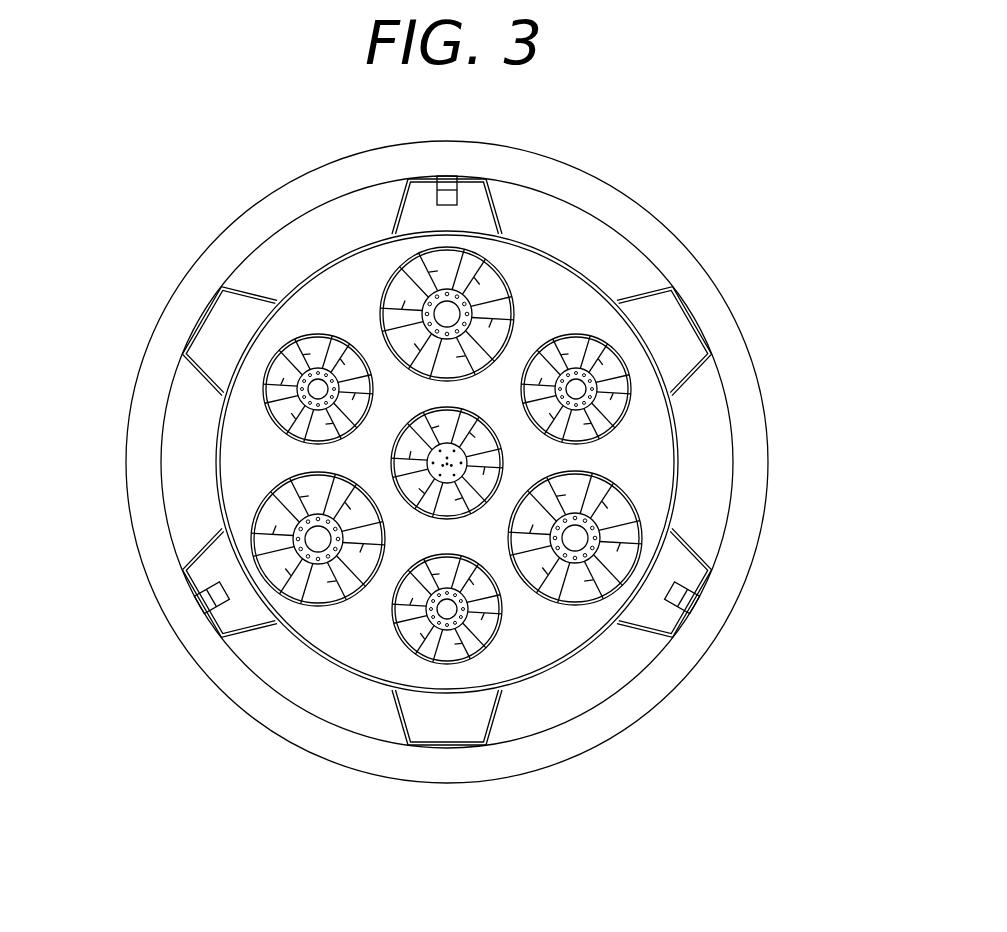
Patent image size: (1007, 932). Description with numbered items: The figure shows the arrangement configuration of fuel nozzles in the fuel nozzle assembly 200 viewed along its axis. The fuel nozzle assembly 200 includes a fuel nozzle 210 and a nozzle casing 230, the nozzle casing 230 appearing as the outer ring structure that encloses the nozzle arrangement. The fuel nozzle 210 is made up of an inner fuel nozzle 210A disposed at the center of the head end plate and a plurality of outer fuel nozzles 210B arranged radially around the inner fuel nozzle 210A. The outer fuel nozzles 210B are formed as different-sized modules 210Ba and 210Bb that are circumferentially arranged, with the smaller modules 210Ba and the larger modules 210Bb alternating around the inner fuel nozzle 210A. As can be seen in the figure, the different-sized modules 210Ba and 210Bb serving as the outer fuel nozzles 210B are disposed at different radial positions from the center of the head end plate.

The fuel nozzle assembly 200 is at (667, 207).
The nozzle casing 230 is at (713, 310).
The fuel nozzle 210 is at (534, 648).
The inner fuel nozzle 210A is at (501, 442).
The outer fuel nozzles 210B is at (415, 817).
The module 210Ba is at (328, 334).
The module 210Bb is at (497, 295).